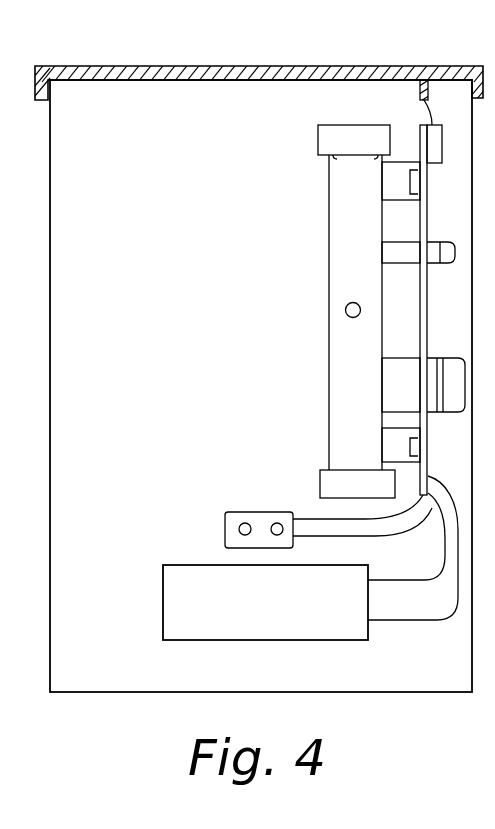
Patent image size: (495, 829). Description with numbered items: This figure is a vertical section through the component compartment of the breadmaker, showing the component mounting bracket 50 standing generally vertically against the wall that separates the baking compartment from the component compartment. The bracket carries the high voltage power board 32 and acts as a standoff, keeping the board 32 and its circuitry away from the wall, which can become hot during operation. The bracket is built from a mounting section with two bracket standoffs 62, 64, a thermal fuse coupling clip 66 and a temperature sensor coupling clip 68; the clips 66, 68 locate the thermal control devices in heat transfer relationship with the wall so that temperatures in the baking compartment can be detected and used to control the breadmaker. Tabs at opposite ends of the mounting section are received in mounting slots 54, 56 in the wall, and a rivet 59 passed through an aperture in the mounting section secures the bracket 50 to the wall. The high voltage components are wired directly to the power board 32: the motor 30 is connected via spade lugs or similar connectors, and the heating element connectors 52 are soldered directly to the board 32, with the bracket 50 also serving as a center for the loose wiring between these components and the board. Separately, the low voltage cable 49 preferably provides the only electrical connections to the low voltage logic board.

The motor 30 is at (192, 644).
The high voltage power board 32 is at (432, 328).
The low voltage cable 49 is at (428, 97).
The component mounting bracket 50 is at (318, 200).
The heating element connectors 52 is at (224, 527).
The mounting slot 54 is at (326, 157).
The mounting slot 56 is at (346, 470).
The rivet 59 is at (345, 310).
The bracket standoff 62 is at (392, 182).
The bracket standoff 64 is at (396, 450).
The thermal fuse coupling clip 66 is at (397, 255).
The temperature sensor coupling clip 68 is at (404, 386).